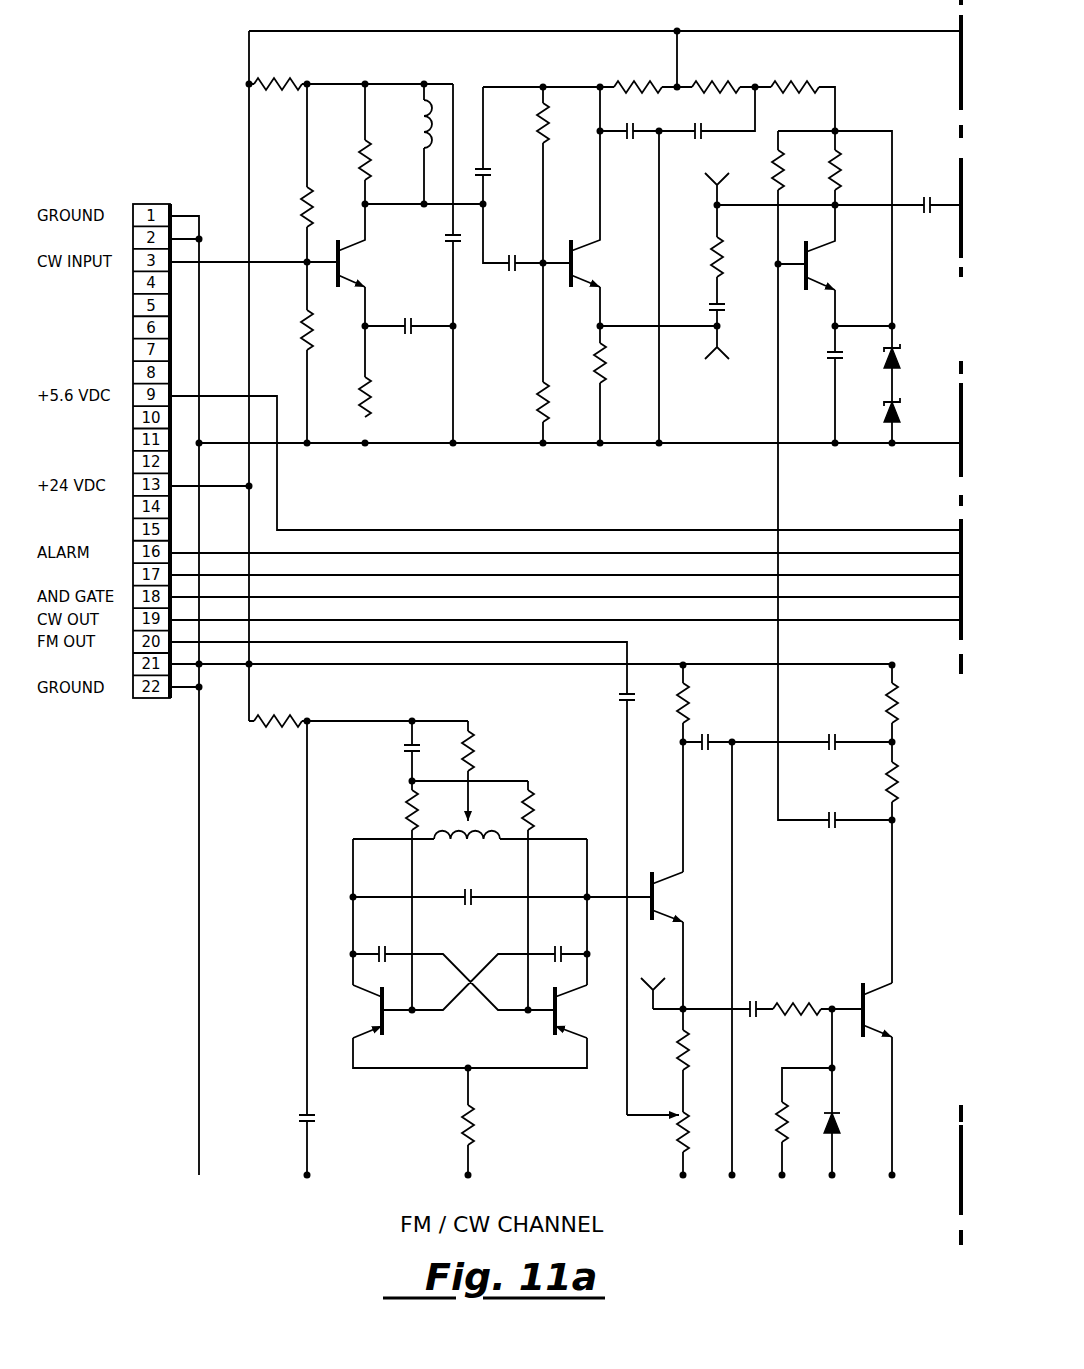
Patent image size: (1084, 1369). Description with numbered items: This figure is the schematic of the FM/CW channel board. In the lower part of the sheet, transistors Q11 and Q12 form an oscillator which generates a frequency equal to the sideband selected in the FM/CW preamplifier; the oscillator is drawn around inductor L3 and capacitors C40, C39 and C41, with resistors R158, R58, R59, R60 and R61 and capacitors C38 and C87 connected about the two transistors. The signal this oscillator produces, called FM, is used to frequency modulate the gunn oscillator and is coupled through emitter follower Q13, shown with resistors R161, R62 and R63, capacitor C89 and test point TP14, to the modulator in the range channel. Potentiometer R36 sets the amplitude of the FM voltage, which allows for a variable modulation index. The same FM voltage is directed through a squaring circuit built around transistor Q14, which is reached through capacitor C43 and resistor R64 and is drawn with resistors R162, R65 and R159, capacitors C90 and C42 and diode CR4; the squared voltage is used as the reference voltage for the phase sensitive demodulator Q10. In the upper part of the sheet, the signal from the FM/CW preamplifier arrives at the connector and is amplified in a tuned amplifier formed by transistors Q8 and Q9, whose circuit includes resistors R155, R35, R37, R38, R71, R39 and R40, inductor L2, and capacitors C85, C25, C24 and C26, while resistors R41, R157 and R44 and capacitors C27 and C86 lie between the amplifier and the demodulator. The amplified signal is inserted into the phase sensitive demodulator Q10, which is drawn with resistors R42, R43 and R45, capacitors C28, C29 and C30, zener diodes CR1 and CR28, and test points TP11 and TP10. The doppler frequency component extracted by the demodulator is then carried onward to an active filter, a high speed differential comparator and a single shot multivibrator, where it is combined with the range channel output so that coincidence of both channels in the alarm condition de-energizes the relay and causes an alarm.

The resistor 100 ohm R155 is at (278, 66).
The resistor 150K R35 is at (286, 205).
The potentiometer R36 is at (290, 329).
The resistor 3.3K R37 is at (347, 158).
The inductor L2 is at (412, 128).
The capacitor 6.8 C85 is at (437, 243).
The capacitor .02 C25 is at (499, 184).
The resistor 8.2K R71 is at (525, 121).
The tuned amplifier transistor Q8 is at (355, 263).
The capacitor 15 C24 is at (403, 349).
The resistor 390 R38 is at (349, 397).
The capacitor 1.0 C26 is at (513, 287).
The tuned amplifier transistor Q9 is at (590, 263).
The resistor 1K R40 is at (584, 363).
The resistor 10K R39 is at (527, 402).
The resistor 470 R41 is at (638, 68).
The resistor 470 R157 is at (716, 68).
The resistor 1.8K R44 is at (795, 68).
The capacitor 6.8 C27 is at (629, 153).
The capacitor 6.8 C86 is at (715, 129).
The test point TP11 is at (719, 178).
The resistor 5.1K R42 is at (699, 257).
The capacitor 1.0 C28 is at (733, 306).
The test point TP10 is at (716, 353).
The resistor 1K R43 is at (794, 169).
The resistor 20K R45 is at (852, 169).
The phase sensitive demodulator Q10 is at (829, 265).
The capacitor 40 C29 is at (819, 360).
The capacitor 40 C30 is at (930, 228).
The zener diode CR1 is at (909, 356).
The zener diode CR28 is at (914, 410).
The capacitor C38 is at (500, 728).
The resistor 220 R158 is at (276, 743).
The resistor 560 R58 is at (487, 751).
The resistor 150K R59 is at (391, 810).
The resistor 150K R60 is at (550, 810).
The variable inductor L3 is at (467, 849).
The capacitor 680 C40 is at (382, 937).
The capacitor .047 C39 is at (463, 921).
The capacitor C80 C41 is at (553, 937).
The oscillator transistor Q11 is at (362, 1011).
The oscillator transistor Q12 is at (580, 1011).
The capacitor 6.8 C87 is at (327, 1123).
The resistor 2.2K R61 is at (490, 1125).
The resistor 470 R161 is at (706, 703).
The capacitor 6.8 C89 is at (704, 765).
The capacitor 6.8 C90 is at (830, 722).
The capacitor 47 C42 is at (830, 800).
The resistor 470 R162 is at (914, 703).
The resistor 7.5K R65 is at (913, 784).
The emitter follower Q13 is at (678, 896).
The test point TP14 is at (650, 983).
The resistor 5.1K R62 is at (665, 1053).
The potentiometer 1K R63 is at (663, 1139).
The capacitor 1.0 C43 is at (754, 1032).
The resistor 2.2K R64 is at (797, 989).
The resistor 10K R159 is at (761, 1124).
The diode CR4 is at (848, 1131).
The squaring circuit transistor Q14 is at (889, 1010).